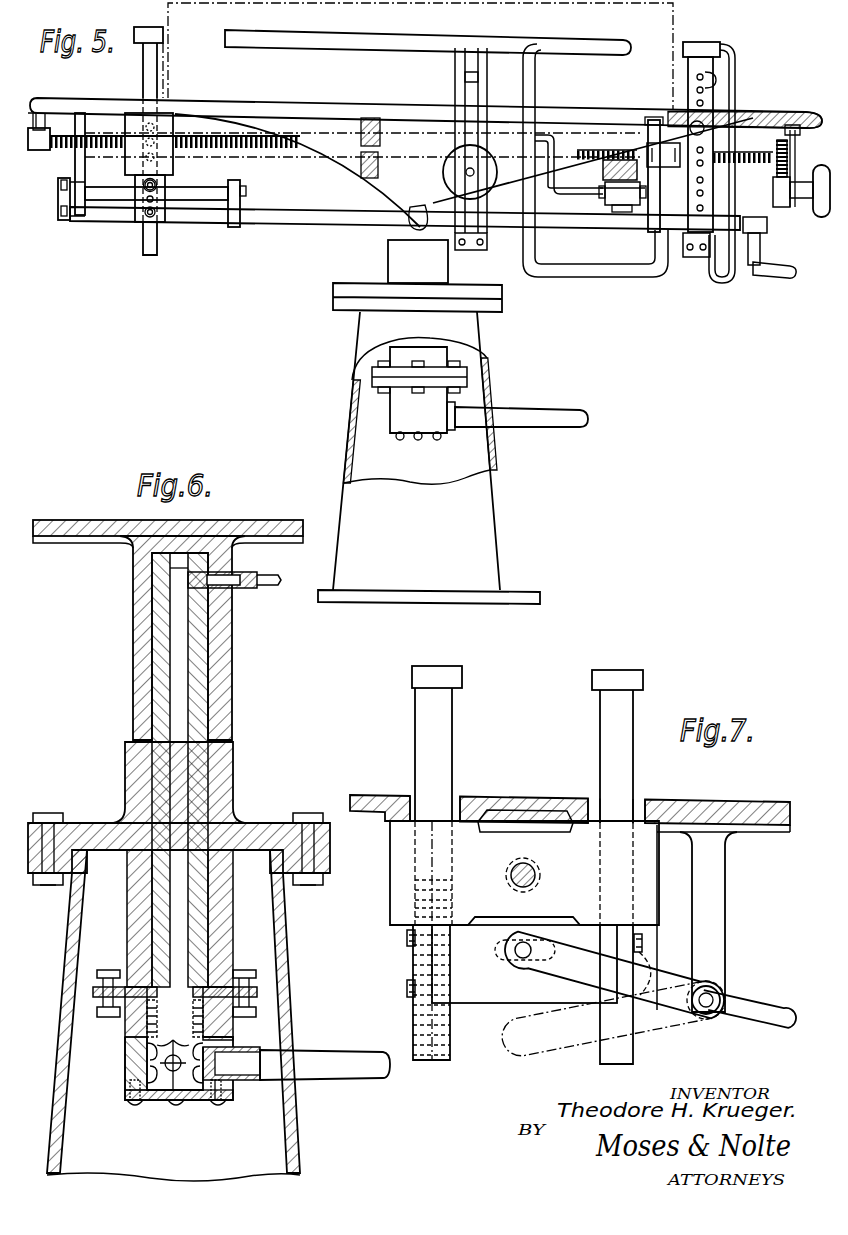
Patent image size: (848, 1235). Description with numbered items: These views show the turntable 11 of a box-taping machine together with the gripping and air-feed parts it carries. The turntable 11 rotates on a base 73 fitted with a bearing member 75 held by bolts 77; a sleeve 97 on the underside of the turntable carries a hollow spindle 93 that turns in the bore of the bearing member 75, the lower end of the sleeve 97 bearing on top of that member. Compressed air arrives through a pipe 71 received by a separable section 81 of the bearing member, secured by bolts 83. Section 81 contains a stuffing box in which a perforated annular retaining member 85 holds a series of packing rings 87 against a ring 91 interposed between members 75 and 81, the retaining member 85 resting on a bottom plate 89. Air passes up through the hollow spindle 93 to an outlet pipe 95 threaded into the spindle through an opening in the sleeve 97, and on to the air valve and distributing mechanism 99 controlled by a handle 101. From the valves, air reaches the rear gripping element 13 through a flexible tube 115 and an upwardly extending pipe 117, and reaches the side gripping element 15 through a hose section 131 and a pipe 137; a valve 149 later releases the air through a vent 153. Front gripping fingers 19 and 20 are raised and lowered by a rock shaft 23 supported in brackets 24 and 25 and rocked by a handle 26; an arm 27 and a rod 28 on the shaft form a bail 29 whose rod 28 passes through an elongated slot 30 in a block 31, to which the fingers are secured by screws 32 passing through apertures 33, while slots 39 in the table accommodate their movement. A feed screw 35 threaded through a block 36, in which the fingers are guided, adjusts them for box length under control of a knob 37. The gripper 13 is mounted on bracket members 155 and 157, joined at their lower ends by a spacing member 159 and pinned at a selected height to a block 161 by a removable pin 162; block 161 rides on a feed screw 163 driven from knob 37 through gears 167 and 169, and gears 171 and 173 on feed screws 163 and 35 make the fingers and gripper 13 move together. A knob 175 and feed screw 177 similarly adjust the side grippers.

In FIG. 5, the turntable 11 is at (110, 98).
In FIG. 6, the turntable 11 is at (72, 520).
In FIG. 7, the turntable 11 is at (543, 801).
In FIG. 5, the rear gripping element 13 is at (697, 42).
In FIG. 5, the side gripping element 15 is at (285, 43).
In FIG. 7, the front gripping finger 19 is at (443, 722).
In FIG. 5, the front gripping finger 20 is at (150, 32).
In FIG. 7, the front gripping finger 20 is at (610, 738).
In FIG. 5, the rock shaft 23 is at (280, 219).
In FIG. 7, the rock shaft 23 is at (721, 994).
In FIG. 5, the bracket 24 is at (655, 232).
In FIG. 5, the bracket 25 is at (77, 155).
In FIG. 7, the bracket 25 is at (715, 921).
In FIG. 5, the handle 26 is at (241, 204).
In FIG. 7, the handle 26 is at (764, 1011).
In FIG. 5, the arm 27 is at (59, 200).
In FIG. 7, the arm 27 is at (567, 972).
In FIG. 5, the rod 28 is at (213, 190).
In FIG. 7, the rod 28 is at (522, 943).
In FIG. 5, the bail-like element 29 is at (55, 209).
In FIG. 7, the elongated slot 30 is at (511, 944).
In FIG. 5, the block 31 is at (137, 198).
In FIG. 7, the block 31 is at (525, 994).
In FIG. 5, the screws 32 is at (157, 202).
In FIG. 7, the screws 32 is at (408, 983).
In FIG. 7, the apertures 33 is at (430, 905).
In FIG. 5, the feed screw 35 is at (111, 150).
In FIG. 7, the feed screw 35 is at (537, 882).
In FIG. 5, the block 36 is at (126, 122).
In FIG. 7, the block 36 is at (398, 857).
In FIG. 5, the knob 37 is at (820, 216).
In FIG. 7, the slots 39 is at (416, 801).
In FIG. 5, the air pipe 71 is at (535, 409).
In FIG. 6, the air pipe 71 is at (320, 1056).
In FIG. 5, the base 73 is at (499, 432).
In FIG. 6, the base 73 is at (304, 1114).
In FIG. 5, the bearing member 75 is at (395, 258).
In FIG. 6, the bearing member 75 is at (226, 790).
In FIG. 6, the bolts 77 is at (55, 814).
In FIG. 5, the separable section 81 is at (398, 418).
In FIG. 6, the separable section 81 is at (134, 1068).
In FIG. 5, the bolts 83 is at (419, 377).
In FIG. 6, the bolts 83 is at (97, 988).
In FIG. 6, the perforated annular retaining member 85 is at (160, 1087).
In FIG. 6, the packing rings 87 is at (147, 1016).
In FIG. 5, the bottom plate 89 is at (426, 438).
In FIG. 6, the bottom plate 89 is at (226, 1096).
In FIG. 6, the ring 91 is at (232, 960).
In FIG. 6, the hollow spindle 93 is at (205, 706).
In FIG. 5, the outlet pipe 95 is at (553, 192).
In FIG. 6, the outlet pipe 95 is at (265, 588).
In FIG. 5, the sleeve 97 is at (433, 213).
In FIG. 6, the sleeve 97 is at (138, 660).
In FIG. 5, the air valve and distributing mechanism 99 is at (605, 170).
In FIG. 5, the handle 101 is at (665, 155).
In FIG. 5, the flexible tube 115 is at (721, 284).
In FIG. 5, the pipe 117 is at (735, 49).
In FIG. 5, the hose section 131 is at (604, 278).
In FIG. 5, the pipe 137 is at (535, 84).
In FIG. 5, the valve 149 is at (612, 207).
In FIG. 5, the vent 153 is at (603, 190).
In FIG. 5, the bracket member 155 is at (479, 78).
In FIG. 5, the bracket member 157 is at (462, 97).
In FIG. 5, the spacing member 159 is at (470, 250).
In FIG. 5, the block 161 is at (745, 120).
In FIG. 5, the removable pin 162 is at (705, 130).
In FIG. 5, the feed screw 163 is at (750, 163).
In FIG. 5, the gear 167 is at (790, 140).
In FIG. 5, the gear 169 is at (780, 208).
In FIG. 5, the gear 171 is at (356, 130).
In FIG. 5, the gear 173 is at (368, 178).
In FIG. 5, the knob 175 is at (485, 179).
In FIG. 5, the feed screw 177 is at (472, 167).